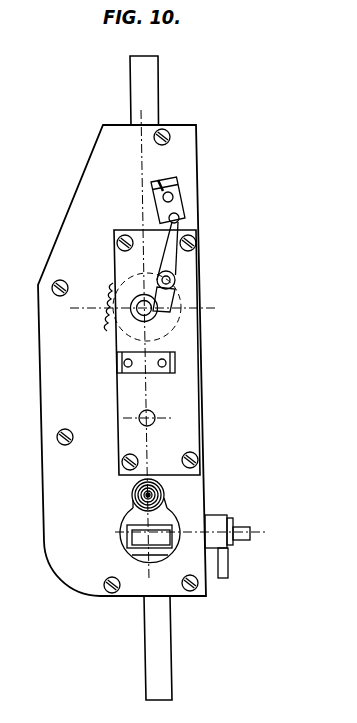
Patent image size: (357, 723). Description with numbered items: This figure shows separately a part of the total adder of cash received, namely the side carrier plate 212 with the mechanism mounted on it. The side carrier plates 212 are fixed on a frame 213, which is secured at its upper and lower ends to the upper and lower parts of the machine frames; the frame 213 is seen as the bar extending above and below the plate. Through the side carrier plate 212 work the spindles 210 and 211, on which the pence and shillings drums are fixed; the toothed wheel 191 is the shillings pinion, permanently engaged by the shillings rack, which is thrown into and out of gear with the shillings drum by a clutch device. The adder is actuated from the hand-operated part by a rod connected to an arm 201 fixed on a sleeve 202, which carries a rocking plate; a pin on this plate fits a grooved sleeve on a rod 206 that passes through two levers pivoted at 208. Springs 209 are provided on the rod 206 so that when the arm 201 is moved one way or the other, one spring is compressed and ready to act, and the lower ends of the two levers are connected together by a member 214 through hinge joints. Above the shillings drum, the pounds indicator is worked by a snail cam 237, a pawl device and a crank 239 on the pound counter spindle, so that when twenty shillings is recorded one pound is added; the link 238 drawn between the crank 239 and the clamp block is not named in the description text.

The side carrier plates 212 is at (97, 194).
The crank 239 is at (181, 206).
The connecting link 238 is at (173, 262).
The snail cam 237 is at (157, 322).
The spindle 211 is at (140, 302).
The toothed wheel 191 is at (108, 313).
The pivot 208 is at (176, 363).
The spindle 210 is at (152, 421).
The springs 209 is at (164, 497).
The rod 206 is at (134, 497).
The member 214 is at (127, 542).
The sleeve 202 is at (249, 532).
The arm 201 is at (227, 566).
The frame 213 is at (162, 651).